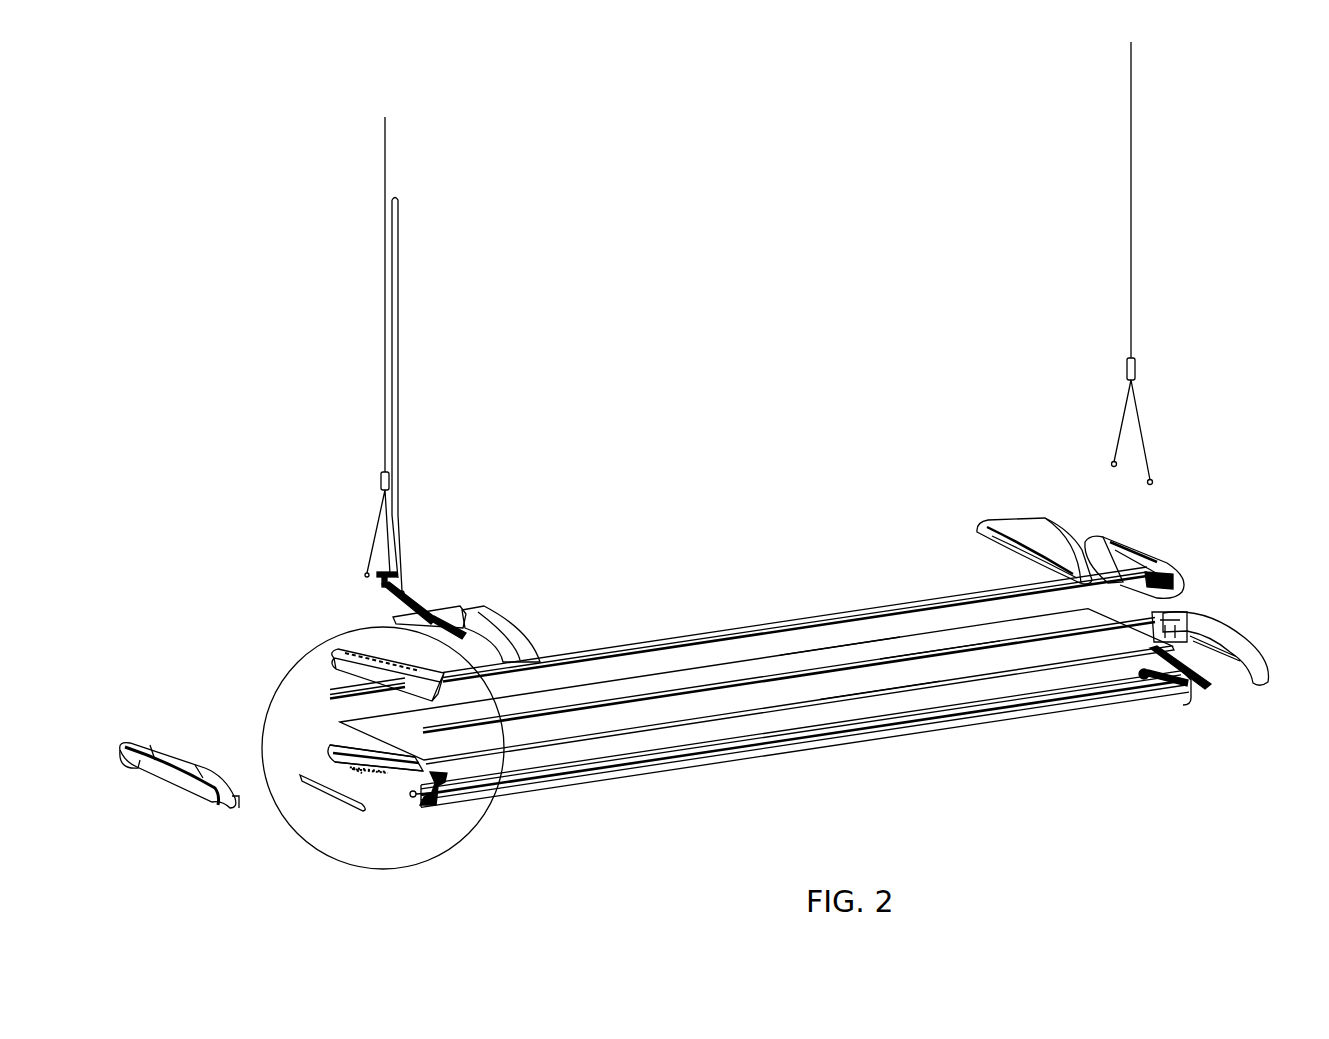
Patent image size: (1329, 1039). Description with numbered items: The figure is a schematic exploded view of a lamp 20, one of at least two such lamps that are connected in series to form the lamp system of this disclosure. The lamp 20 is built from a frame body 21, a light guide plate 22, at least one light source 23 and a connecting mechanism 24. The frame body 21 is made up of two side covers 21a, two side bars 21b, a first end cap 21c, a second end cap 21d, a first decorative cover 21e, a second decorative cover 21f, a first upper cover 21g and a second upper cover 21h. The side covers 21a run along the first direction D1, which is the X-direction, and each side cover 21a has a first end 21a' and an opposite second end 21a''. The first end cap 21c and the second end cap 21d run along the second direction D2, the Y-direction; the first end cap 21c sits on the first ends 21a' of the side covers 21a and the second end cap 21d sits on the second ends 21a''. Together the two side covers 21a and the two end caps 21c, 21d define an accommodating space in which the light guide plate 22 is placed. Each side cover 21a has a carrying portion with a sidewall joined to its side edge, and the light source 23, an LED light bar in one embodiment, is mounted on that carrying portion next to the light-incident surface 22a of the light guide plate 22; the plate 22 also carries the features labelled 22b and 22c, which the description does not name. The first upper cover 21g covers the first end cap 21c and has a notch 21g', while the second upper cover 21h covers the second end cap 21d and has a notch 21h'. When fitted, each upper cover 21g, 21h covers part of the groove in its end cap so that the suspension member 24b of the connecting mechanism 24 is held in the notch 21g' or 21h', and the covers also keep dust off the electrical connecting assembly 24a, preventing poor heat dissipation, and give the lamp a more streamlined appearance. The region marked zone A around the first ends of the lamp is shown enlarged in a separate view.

The lamp 20 is at (224, 155).
The frame body 21 is at (318, 728).
The side covers 21a is at (691, 776).
The first end 21a' is at (481, 818).
The second end 21a'' is at (1174, 709).
The side bars 21b is at (727, 688).
The first end cap 21c is at (332, 655).
The second end cap 21d is at (1158, 556).
The first decorative cover 21e is at (170, 772).
The second decorative cover 21f is at (1222, 633).
The first upper cover 21g is at (436, 588).
The notch 21g' is at (501, 613).
The second upper cover 21h is at (1034, 525).
The notch 21h' is at (1086, 521).
The light guide plate 22 is at (667, 683).
The light-incident surface 22a is at (878, 701).
The display panel part 22b is at (832, 655).
The display panel part 22c is at (941, 666).
The light source 23 is at (414, 798).
The connecting mechanism 24 is at (216, 522).
The electrical connecting assembly 24a is at (348, 631).
The suspension member 24b is at (378, 554).
The zone A is at (383, 757).
The first direction D1 is at (470, 410).
The second direction D2 is at (470, 410).